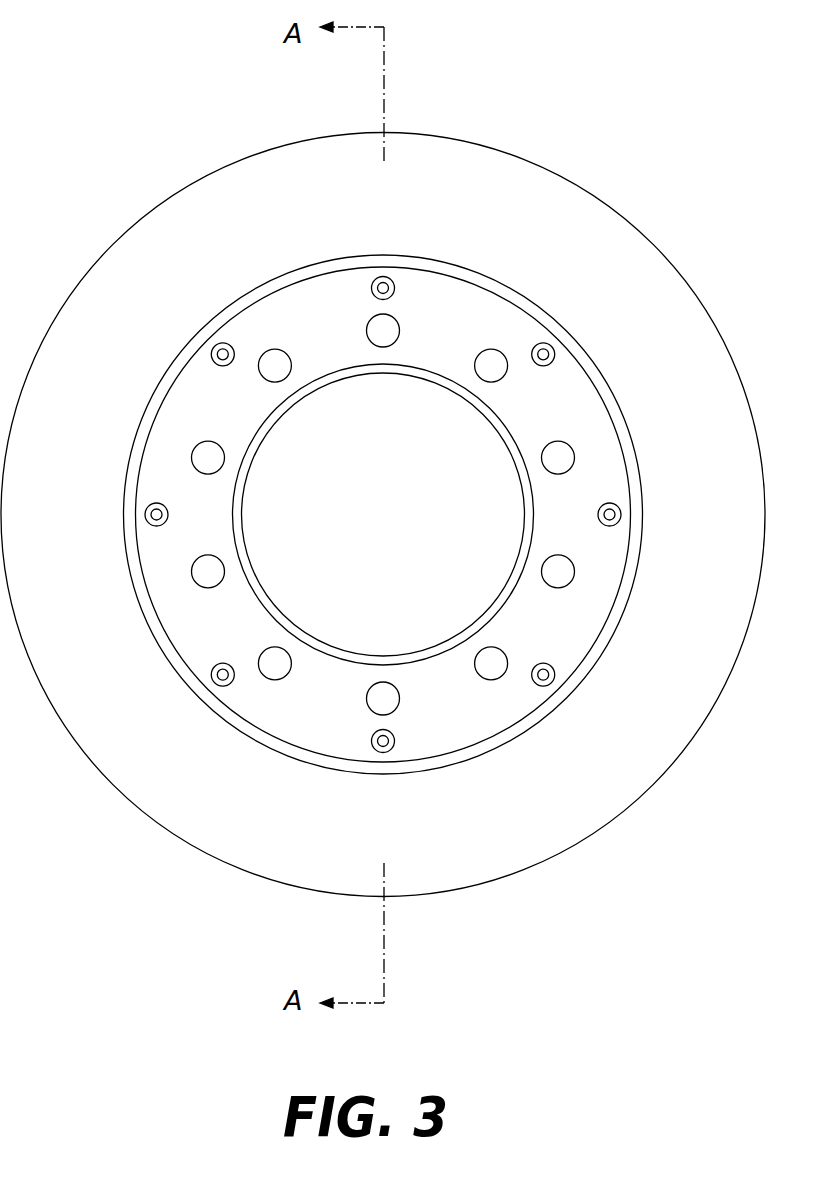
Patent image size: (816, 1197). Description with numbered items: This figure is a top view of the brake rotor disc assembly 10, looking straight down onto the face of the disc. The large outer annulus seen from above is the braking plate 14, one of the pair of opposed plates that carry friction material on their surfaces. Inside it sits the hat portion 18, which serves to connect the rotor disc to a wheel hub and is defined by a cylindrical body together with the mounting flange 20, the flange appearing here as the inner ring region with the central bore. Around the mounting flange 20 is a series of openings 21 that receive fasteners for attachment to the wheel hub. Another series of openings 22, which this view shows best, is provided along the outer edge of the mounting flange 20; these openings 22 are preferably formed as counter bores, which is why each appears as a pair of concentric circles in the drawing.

The brake rotor disc assembly 10 is at (671, 110).
The braking plate 14 is at (465, 163).
The hat portion 18 is at (341, 378).
The mounting flange 20 is at (522, 428).
The openings 21 is at (485, 381).
The openings 22 is at (599, 512).